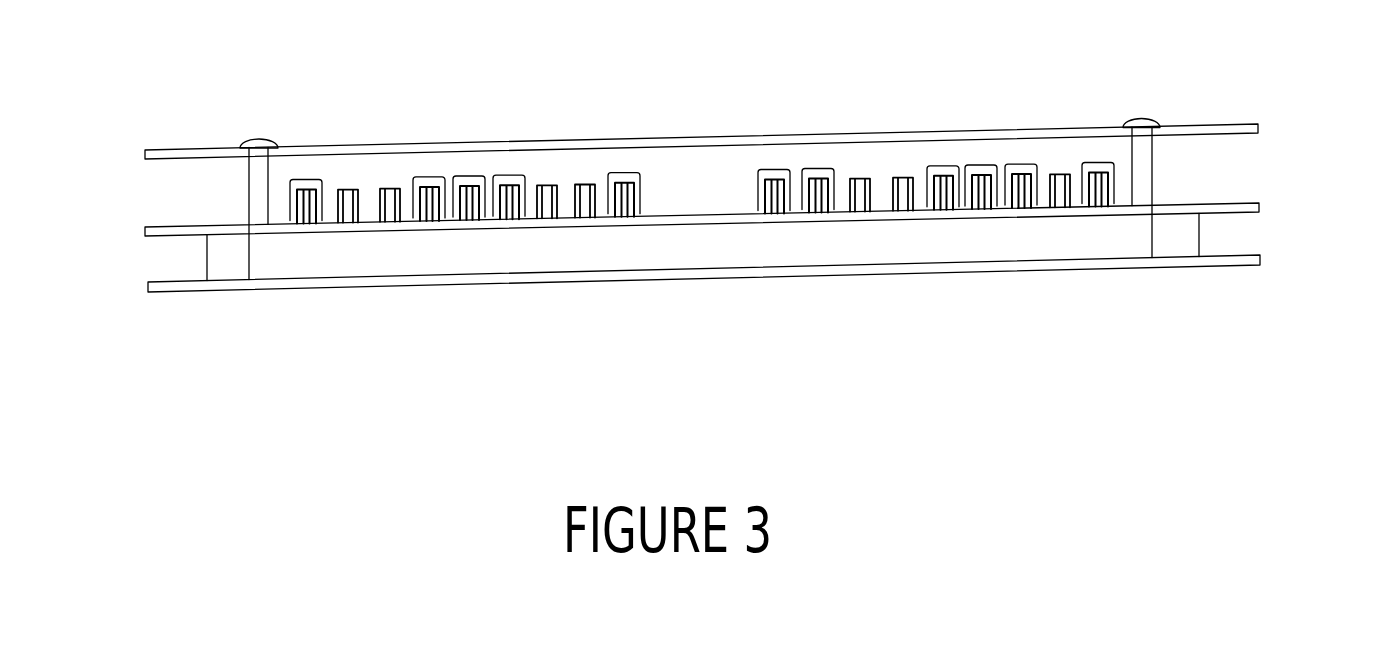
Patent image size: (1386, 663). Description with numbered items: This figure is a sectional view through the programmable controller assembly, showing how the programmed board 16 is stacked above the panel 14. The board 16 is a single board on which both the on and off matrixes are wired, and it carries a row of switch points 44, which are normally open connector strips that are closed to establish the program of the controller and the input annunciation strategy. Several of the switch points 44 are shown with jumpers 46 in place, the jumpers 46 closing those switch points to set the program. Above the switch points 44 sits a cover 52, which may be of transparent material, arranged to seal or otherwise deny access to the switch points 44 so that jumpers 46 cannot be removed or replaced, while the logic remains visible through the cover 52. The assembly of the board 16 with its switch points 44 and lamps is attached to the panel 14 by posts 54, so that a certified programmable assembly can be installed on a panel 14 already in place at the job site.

The panel 14 is at (703, 280).
The board 16 is at (701, 215).
The switch points 44 is at (478, 220).
The jumpers 46 is at (505, 290).
The cover 52 is at (591, 139).
The posts 54 is at (207, 260).